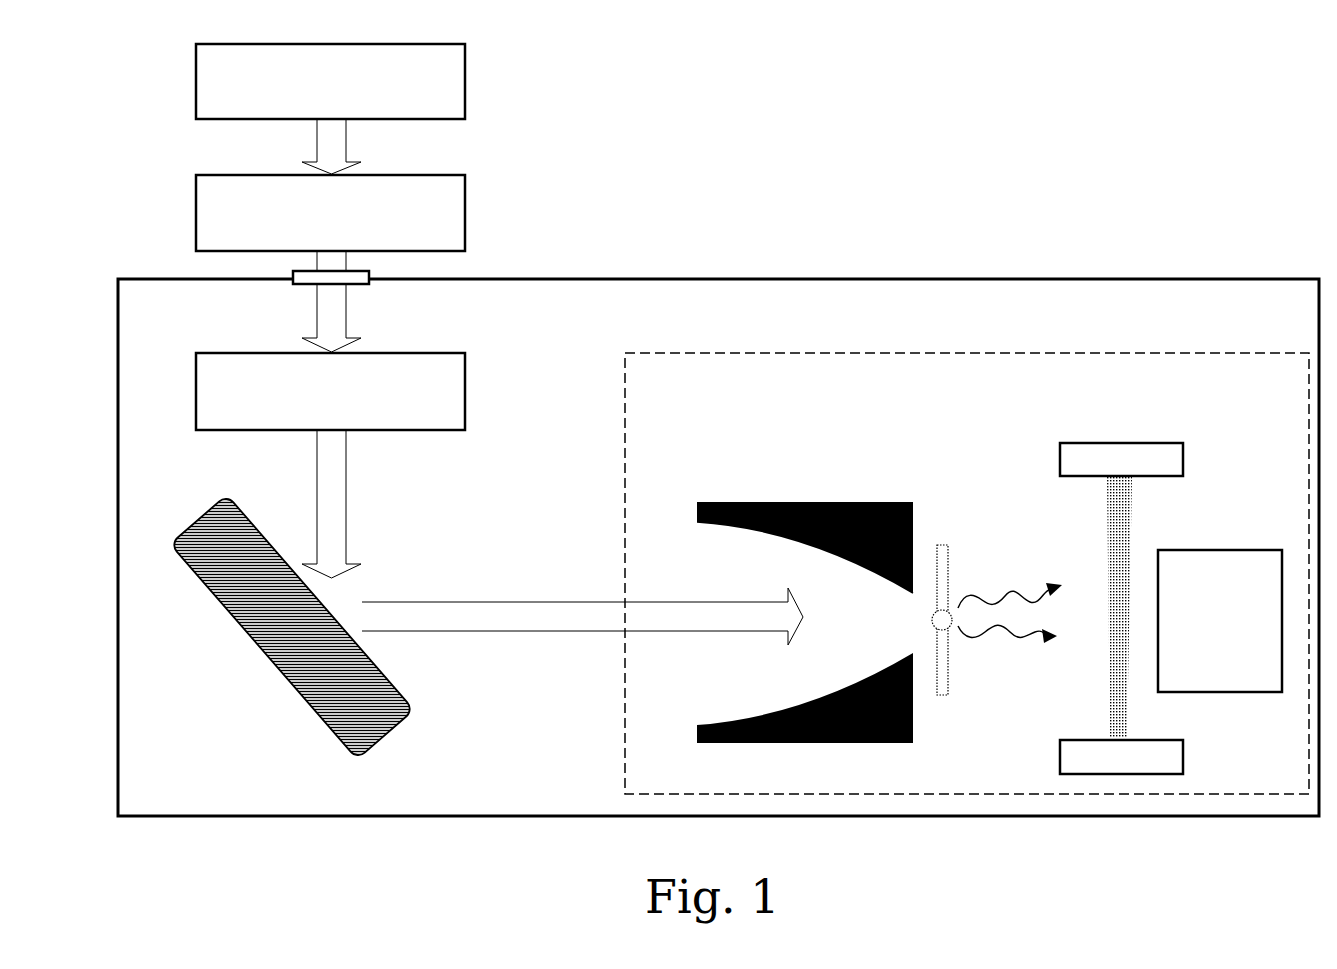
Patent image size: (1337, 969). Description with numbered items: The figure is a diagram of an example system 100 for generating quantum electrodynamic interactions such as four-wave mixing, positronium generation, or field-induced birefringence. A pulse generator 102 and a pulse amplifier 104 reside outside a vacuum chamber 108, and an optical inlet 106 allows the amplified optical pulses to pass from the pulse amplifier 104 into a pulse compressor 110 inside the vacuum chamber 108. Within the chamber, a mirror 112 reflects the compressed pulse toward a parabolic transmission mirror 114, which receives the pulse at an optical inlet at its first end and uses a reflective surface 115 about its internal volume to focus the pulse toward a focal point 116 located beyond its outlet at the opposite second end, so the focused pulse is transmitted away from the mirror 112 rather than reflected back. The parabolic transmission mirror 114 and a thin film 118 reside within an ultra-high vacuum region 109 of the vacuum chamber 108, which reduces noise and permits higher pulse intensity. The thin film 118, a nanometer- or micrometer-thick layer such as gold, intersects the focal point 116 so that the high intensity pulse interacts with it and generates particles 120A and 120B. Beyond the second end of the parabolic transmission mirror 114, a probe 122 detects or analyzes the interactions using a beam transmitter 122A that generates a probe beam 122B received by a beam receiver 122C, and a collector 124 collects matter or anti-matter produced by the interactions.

The system 100 is at (1154, 69).
The pulse generator 102 is at (465, 82).
The pulse amplifier 104 is at (465, 212).
The optical inlet 106 is at (370, 276).
The vacuum chamber 108 is at (969, 278).
The ultra-high vacuum region 109 is at (1078, 353).
The pulse compressor 110 is at (465, 390).
The mirror 112 is at (198, 508).
The parabolic transmission mirror 114 is at (780, 470).
The reflective surface 115 is at (757, 533).
The focal point 116 is at (944, 611).
The thin film 118 is at (940, 545).
The particles 120A is at (1028, 562).
The particles 120B is at (1025, 675).
The probe 122 is at (1200, 416).
The beam transmitter 122A is at (1185, 460).
The probe beam 122B is at (1148, 515).
The beam receiver 122C is at (1183, 762).
The collector 124 is at (1237, 550).